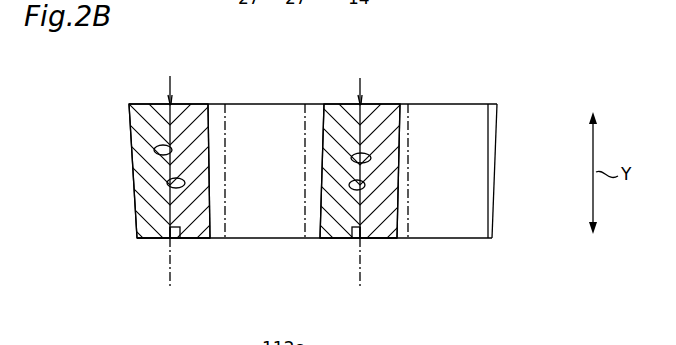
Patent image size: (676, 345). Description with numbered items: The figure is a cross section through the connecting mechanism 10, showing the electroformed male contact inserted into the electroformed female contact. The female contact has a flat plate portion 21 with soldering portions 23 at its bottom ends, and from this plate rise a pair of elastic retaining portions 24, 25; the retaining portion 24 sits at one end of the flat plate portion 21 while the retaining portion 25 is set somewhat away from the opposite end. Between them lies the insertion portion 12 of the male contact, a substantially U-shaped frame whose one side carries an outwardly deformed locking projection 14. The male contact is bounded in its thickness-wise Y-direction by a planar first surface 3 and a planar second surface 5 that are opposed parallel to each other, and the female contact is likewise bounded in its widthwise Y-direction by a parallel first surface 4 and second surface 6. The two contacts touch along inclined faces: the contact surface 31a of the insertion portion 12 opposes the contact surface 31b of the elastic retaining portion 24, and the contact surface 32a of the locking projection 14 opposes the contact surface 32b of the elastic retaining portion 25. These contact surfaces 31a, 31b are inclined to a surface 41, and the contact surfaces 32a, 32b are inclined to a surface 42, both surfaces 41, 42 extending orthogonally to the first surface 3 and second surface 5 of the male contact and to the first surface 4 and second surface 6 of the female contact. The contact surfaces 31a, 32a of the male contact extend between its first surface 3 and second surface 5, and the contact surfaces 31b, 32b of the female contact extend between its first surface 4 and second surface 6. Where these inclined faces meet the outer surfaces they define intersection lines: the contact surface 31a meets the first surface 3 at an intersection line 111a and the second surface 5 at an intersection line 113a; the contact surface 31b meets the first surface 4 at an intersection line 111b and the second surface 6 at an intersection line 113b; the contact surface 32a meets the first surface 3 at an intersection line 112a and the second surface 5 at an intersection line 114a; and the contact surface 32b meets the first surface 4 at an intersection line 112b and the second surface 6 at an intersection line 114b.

The connecting mechanism 10 is at (514, 100).
The first surface 3 is at (190, 104).
The first surface 4 is at (163, 104).
The second surface 5 is at (197, 238).
The second surface 6 is at (140, 238).
The insertion portion 12 is at (204, 238).
The locking projection 14 is at (340, 238).
The flat plate portion 21 is at (264, 130).
The soldering portion 23 is at (463, 120).
The elastic retaining portion 24 is at (147, 115).
The elastic retaining portion 25 is at (390, 104).
The contact surface 31a is at (170, 145).
The contact surface 31b is at (170, 188).
The contact surface 32a is at (353, 160).
The contact surface 32b is at (360, 191).
The surface 41 is at (166, 270).
The surface 42 is at (364, 266).
The intersection line 111a is at (171, 104).
The intersection line 111b is at (167, 102).
The intersection line 112a is at (360, 104).
The intersection line 112b is at (362, 104).
The intersection line 113a is at (172, 240).
The intersection line 113b is at (165, 238).
The intersection line 114a is at (361, 238).
The intersection line 114b is at (365, 238).